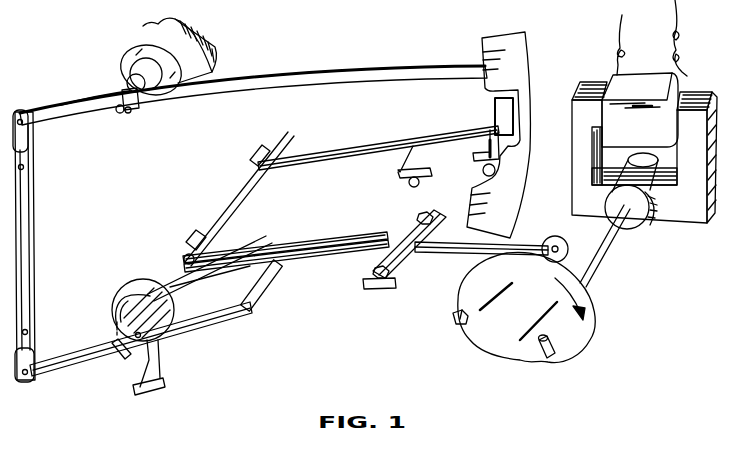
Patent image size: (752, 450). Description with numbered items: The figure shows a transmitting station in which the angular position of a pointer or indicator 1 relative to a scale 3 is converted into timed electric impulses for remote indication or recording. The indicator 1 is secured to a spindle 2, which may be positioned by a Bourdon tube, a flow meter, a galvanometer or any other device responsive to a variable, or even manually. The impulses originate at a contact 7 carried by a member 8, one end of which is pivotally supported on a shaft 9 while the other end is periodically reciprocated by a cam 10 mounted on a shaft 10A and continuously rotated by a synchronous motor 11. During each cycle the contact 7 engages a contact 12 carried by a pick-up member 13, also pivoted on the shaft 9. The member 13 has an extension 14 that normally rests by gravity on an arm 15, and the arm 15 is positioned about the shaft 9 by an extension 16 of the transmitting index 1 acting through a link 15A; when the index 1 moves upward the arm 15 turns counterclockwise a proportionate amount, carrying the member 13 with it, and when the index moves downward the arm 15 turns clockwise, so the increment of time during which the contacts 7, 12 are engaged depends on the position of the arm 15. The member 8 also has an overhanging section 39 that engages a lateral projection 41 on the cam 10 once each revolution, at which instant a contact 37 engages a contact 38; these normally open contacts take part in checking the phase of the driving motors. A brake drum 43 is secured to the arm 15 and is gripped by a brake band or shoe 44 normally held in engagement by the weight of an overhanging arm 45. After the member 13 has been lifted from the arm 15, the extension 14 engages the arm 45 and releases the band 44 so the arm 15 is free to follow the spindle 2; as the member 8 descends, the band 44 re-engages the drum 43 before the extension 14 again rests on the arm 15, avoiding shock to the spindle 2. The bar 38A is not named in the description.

The pointer or indicator 1 is at (351, 70).
The spindle 2 is at (119, 112).
The scale 3 is at (530, 70).
The contact 7 is at (392, 275).
The member 8 is at (428, 253).
The shaft 9 is at (220, 221).
The cam 10 is at (593, 334).
The shaft 10A is at (604, 250).
The synchronous motor 11 is at (688, 224).
The contact 12 is at (372, 254).
The pick-up member 13 is at (366, 240).
The extension 14 is at (275, 278).
The arm 15 is at (203, 328).
The link 15A is at (37, 216).
The extension 16 is at (82, 105).
The contact 37 is at (427, 210).
The contact 38 is at (408, 178).
The bar 38A is at (303, 151).
The overhanging section 39 is at (567, 252).
The lateral projection 41 is at (453, 319).
The brake drum 43 is at (172, 303).
The brake band or shoe 44 is at (117, 304).
The overhanging arm 45 is at (262, 246).